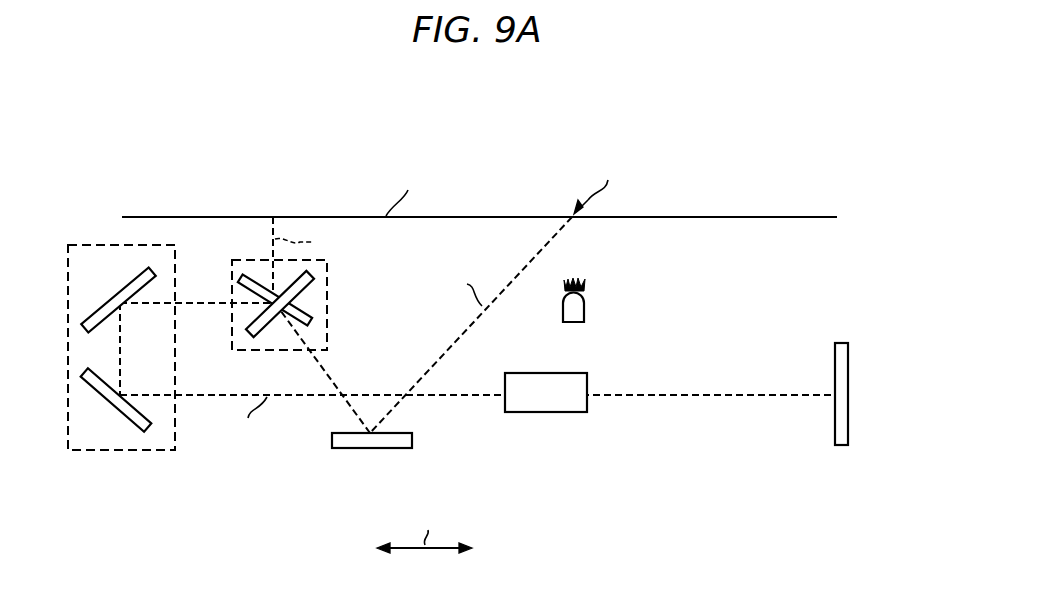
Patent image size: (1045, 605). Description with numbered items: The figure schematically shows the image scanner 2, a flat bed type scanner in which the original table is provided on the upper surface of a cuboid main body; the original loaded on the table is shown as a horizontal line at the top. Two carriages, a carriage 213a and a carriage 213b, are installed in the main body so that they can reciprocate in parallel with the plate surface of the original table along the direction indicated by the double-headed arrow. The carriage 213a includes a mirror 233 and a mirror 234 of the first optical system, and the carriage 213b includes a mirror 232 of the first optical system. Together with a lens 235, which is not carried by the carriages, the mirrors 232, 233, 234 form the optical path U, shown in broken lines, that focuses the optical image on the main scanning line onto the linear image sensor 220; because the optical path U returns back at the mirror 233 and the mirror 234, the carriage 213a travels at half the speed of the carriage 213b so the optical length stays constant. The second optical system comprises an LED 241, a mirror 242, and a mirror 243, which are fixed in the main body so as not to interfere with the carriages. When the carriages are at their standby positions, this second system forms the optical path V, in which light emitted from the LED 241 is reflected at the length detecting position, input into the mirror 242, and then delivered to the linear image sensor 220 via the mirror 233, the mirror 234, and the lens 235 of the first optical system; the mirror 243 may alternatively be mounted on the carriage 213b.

The image scanner 2 is at (468, 136).
The carriage 213a is at (92, 453).
The carriage 213b is at (329, 339).
The linear image sensor 220 is at (842, 447).
The mirror 232 is at (255, 333).
The mirror 233 is at (143, 273).
The mirror 234 is at (146, 428).
The lens 235 is at (545, 373).
The LED 241 is at (585, 307).
The mirror 242 is at (372, 450).
The mirror 243 is at (298, 306).